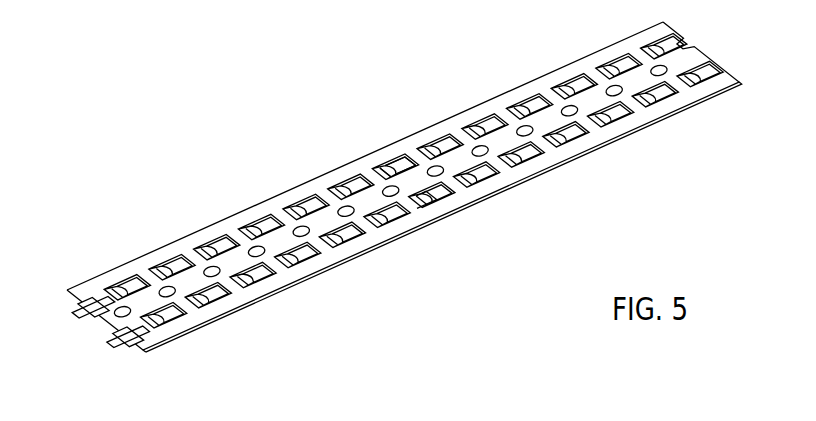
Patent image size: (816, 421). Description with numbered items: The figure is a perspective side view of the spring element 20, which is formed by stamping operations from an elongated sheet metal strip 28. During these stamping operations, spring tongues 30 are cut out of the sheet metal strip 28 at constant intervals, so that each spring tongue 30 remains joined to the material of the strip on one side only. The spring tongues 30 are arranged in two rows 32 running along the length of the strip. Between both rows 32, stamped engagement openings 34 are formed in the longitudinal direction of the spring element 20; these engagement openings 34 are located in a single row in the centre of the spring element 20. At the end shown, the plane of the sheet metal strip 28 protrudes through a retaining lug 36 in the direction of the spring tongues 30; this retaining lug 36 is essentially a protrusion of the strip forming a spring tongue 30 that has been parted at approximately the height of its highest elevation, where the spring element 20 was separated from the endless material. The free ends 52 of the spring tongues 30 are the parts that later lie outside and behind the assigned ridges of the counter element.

The spring element 20 is at (521, 217).
The sheet metal strip 28 is at (528, 78).
The spring tongues 30 is at (390, 218).
The rows 32 is at (410, 202).
The engagement openings 34 is at (301, 228).
The retaining lug 36 is at (122, 335).
The free ends 52 is at (162, 258).